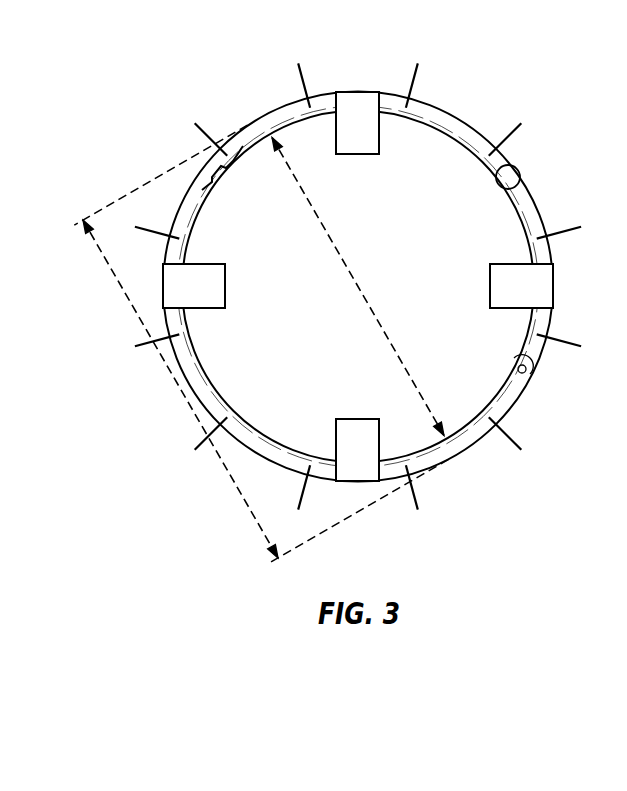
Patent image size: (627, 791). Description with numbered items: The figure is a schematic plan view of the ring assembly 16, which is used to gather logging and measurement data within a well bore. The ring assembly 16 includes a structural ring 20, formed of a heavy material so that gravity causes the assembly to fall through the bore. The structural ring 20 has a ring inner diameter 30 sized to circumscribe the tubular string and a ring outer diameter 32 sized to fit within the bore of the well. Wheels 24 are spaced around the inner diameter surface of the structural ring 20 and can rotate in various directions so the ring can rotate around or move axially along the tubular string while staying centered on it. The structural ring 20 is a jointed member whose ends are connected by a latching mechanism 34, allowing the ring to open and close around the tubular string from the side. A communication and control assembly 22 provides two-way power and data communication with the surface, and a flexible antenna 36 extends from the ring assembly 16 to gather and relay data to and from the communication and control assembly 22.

The ring assembly 16 is at (240, 66).
The structural ring 20 is at (495, 407).
The communication and control assembly 22 is at (513, 166).
The wheels 24 is at (358, 112).
The ring inner diameter 30 is at (360, 283).
The ring outer diameter 32 is at (182, 385).
The latching mechanism 34 is at (226, 188).
The antenna 36 is at (565, 232).